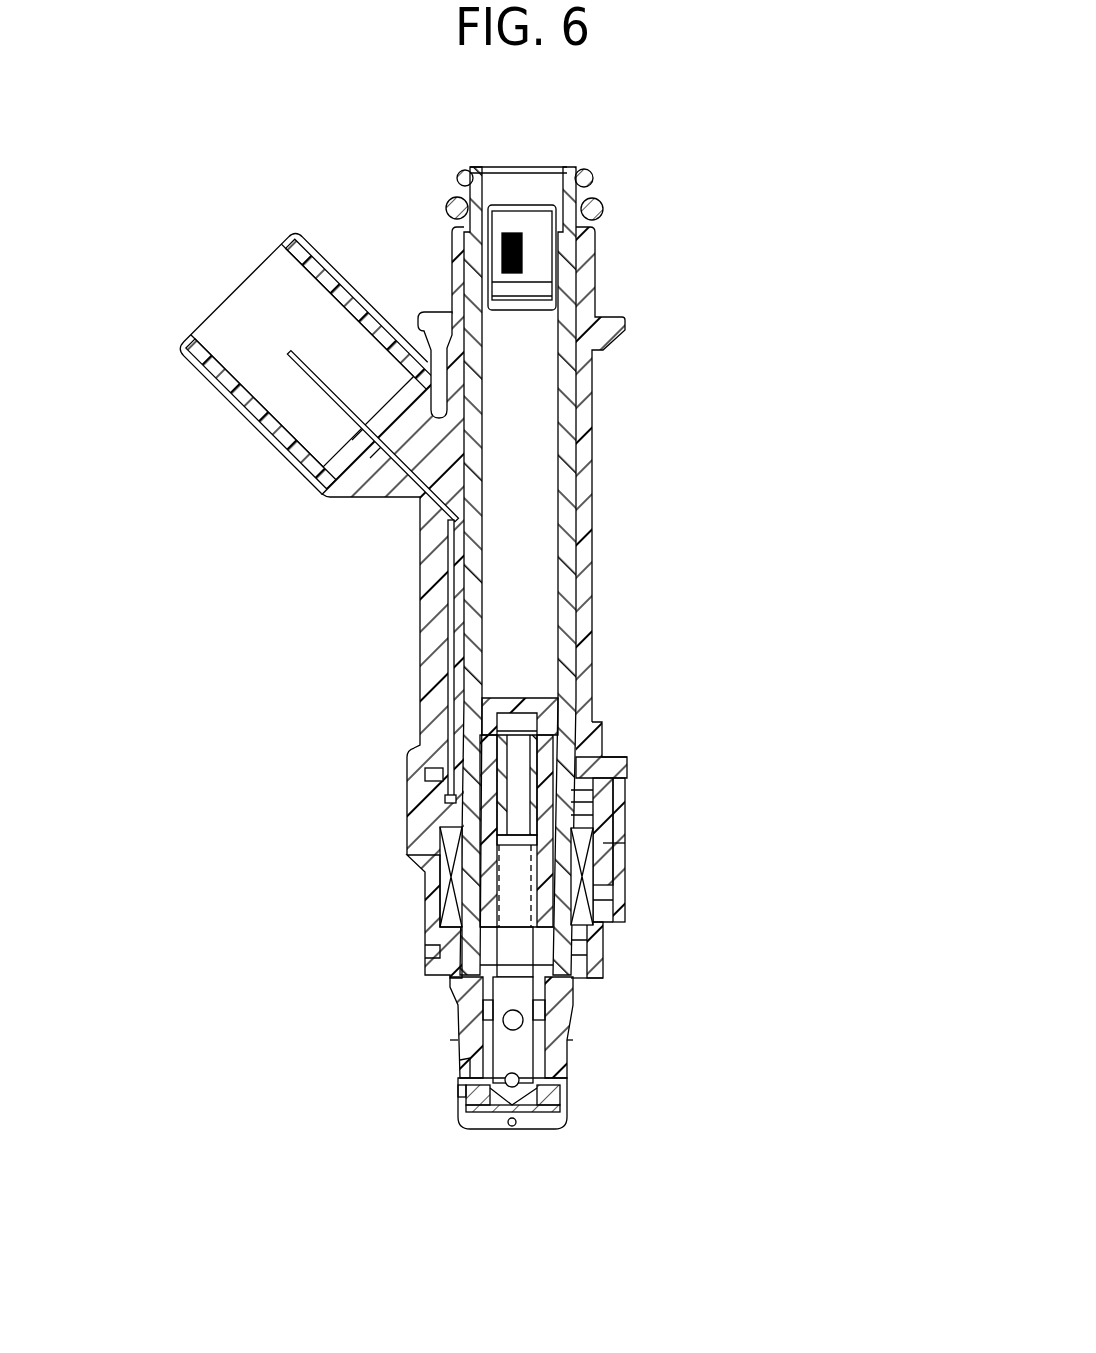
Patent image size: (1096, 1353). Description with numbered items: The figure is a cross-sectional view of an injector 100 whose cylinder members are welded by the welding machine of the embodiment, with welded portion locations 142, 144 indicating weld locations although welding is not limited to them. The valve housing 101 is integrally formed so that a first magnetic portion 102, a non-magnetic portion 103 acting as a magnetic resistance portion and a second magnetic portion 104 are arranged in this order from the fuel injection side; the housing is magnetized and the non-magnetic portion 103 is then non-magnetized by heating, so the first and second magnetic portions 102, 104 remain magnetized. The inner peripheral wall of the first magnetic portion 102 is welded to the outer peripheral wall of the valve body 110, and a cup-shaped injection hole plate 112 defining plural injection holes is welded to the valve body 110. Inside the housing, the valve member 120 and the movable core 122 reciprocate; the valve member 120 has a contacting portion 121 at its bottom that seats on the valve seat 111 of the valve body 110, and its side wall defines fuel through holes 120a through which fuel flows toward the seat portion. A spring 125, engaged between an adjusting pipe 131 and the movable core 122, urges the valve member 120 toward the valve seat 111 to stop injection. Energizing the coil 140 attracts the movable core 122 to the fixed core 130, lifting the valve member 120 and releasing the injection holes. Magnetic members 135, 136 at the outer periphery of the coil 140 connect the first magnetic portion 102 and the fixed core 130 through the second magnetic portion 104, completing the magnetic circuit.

The injector 100 is at (603, 160).
The valve housing 101 is at (580, 497).
The first magnetic portion 102 is at (578, 967).
The non-magnetic portion 103 is at (597, 890).
The second magnetic portion 104 is at (567, 588).
The valve body 110 is at (568, 1100).
The valve seat 111 is at (470, 1058).
The injection hole plate 112 is at (537, 1112).
The valve member 120 is at (485, 1008).
The fuel through holes 120a is at (573, 1008).
The contacting portion 121 is at (511, 1128).
The movable core 122 is at (605, 936).
The spring 125 is at (625, 843).
The fixed core 130 is at (590, 741).
The adjusting pipe 131 is at (498, 808).
The magnetic member 135 is at (430, 930).
The magnetic member 136 is at (612, 805).
The coil 140 is at (447, 870).
The welded portion location 142 is at (575, 1078).
The welded portion location 144 is at (455, 1075).